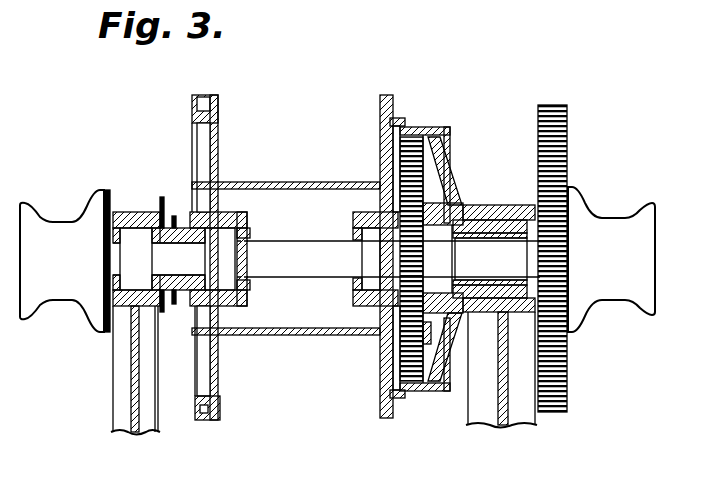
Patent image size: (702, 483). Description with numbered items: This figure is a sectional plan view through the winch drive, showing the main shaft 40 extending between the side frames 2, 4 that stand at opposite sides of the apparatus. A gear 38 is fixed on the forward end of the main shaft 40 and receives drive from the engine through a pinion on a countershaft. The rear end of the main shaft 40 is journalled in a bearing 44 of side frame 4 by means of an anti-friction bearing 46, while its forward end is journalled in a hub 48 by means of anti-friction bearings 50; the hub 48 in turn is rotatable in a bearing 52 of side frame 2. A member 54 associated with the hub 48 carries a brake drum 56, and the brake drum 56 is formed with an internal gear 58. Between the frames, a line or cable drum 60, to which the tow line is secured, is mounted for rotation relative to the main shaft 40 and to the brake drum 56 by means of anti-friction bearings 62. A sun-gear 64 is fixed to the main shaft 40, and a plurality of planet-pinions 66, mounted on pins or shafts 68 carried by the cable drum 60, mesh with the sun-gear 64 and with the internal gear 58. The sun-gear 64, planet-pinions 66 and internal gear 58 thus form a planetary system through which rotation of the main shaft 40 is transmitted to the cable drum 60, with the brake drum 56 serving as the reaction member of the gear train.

The side frame 2 is at (528, 414).
The side frame 4 is at (150, 430).
The gear 38 is at (556, 106).
The main shaft 40 is at (283, 268).
The bearing 44 is at (137, 232).
The anti-friction bearing 46 is at (160, 214).
The hub 48 is at (499, 210).
The anti-friction bearings 50 is at (467, 208).
The bearing 52 is at (490, 208).
The member 54 is at (446, 186).
The brake drum 56 is at (423, 127).
The internal gear 58 is at (410, 164).
The line or cable drum 60 is at (262, 182).
The anti-friction bearings 62 is at (232, 236).
The sun-gear 64 is at (366, 276).
The planet-pinions 66 is at (392, 368).
The pins or shafts 68 is at (430, 338).